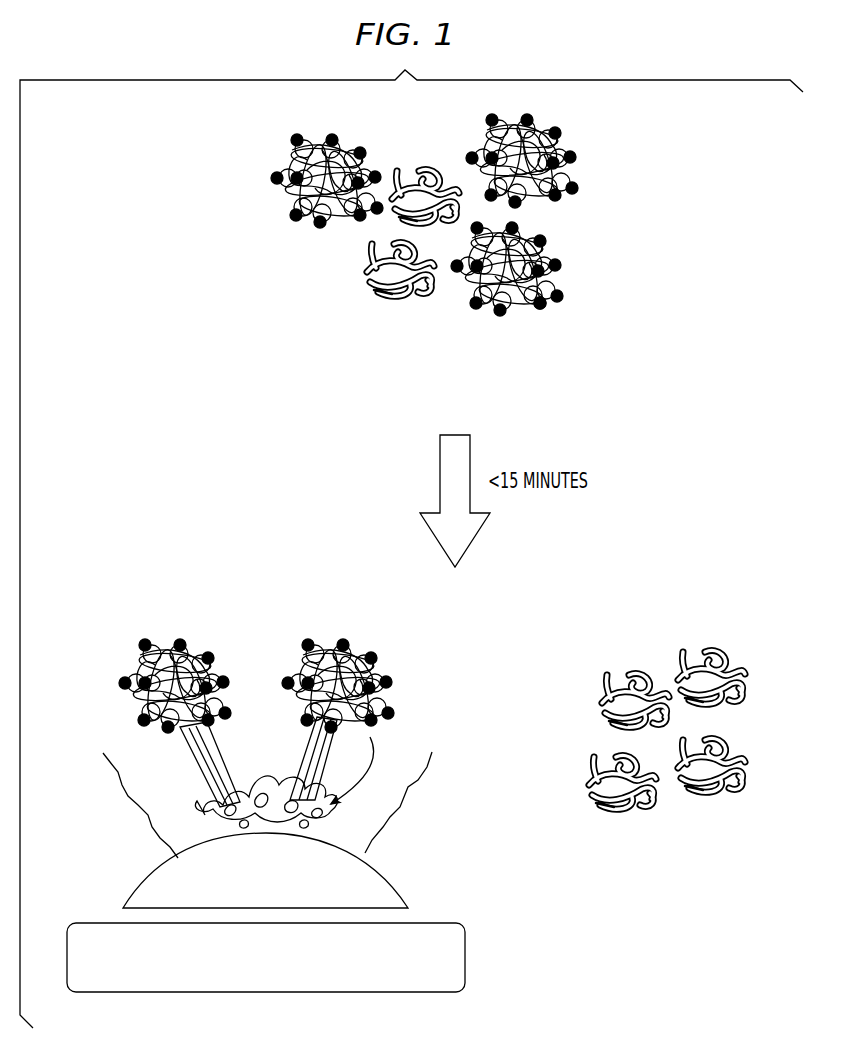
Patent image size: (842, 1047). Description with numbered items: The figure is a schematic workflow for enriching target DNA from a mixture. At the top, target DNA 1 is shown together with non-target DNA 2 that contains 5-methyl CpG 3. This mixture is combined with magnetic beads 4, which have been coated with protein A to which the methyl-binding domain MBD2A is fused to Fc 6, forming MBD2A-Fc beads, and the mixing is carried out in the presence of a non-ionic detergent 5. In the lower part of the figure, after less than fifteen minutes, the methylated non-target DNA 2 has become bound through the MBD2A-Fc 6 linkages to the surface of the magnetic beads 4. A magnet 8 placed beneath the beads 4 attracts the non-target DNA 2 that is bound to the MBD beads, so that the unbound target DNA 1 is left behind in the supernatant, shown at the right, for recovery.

The target DNA 1 is at (394, 218).
The non-target DNA 2 is at (590, 167).
The 5-methyl CpG 3 is at (575, 293).
The magnetic beads 4 is at (412, 883).
The non-ionic detergent 5 is at (123, 808).
The Fc 6 is at (178, 757).
The magnet 8 is at (480, 958).